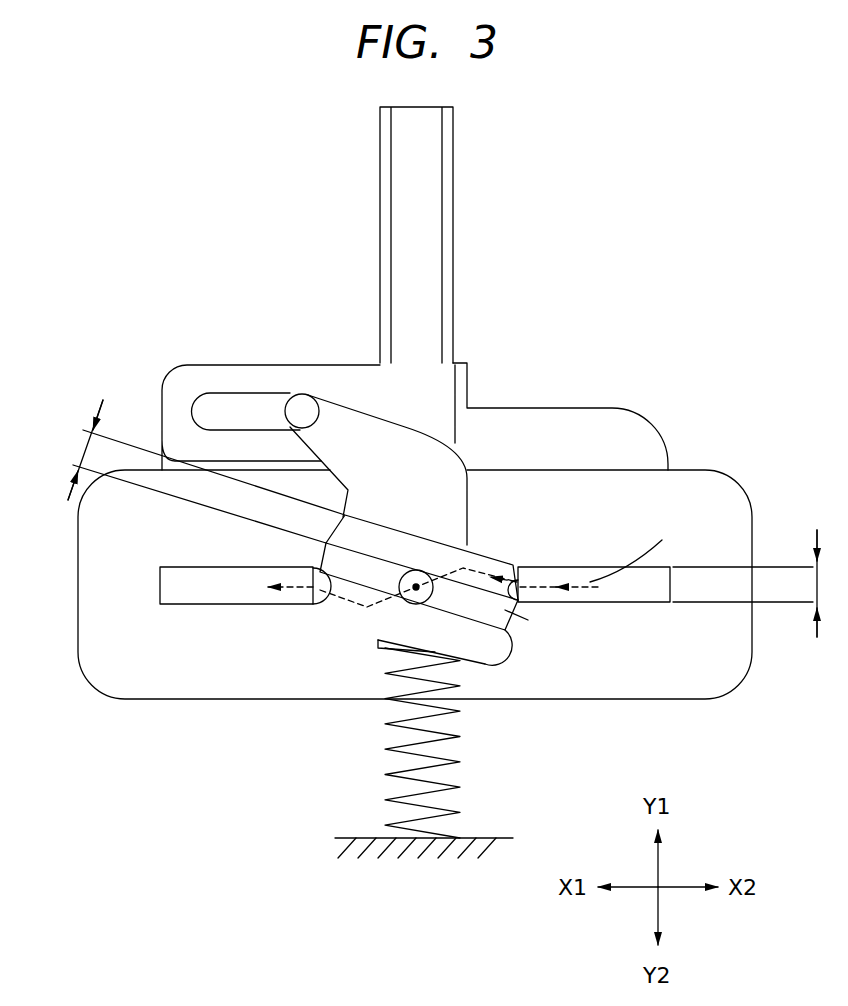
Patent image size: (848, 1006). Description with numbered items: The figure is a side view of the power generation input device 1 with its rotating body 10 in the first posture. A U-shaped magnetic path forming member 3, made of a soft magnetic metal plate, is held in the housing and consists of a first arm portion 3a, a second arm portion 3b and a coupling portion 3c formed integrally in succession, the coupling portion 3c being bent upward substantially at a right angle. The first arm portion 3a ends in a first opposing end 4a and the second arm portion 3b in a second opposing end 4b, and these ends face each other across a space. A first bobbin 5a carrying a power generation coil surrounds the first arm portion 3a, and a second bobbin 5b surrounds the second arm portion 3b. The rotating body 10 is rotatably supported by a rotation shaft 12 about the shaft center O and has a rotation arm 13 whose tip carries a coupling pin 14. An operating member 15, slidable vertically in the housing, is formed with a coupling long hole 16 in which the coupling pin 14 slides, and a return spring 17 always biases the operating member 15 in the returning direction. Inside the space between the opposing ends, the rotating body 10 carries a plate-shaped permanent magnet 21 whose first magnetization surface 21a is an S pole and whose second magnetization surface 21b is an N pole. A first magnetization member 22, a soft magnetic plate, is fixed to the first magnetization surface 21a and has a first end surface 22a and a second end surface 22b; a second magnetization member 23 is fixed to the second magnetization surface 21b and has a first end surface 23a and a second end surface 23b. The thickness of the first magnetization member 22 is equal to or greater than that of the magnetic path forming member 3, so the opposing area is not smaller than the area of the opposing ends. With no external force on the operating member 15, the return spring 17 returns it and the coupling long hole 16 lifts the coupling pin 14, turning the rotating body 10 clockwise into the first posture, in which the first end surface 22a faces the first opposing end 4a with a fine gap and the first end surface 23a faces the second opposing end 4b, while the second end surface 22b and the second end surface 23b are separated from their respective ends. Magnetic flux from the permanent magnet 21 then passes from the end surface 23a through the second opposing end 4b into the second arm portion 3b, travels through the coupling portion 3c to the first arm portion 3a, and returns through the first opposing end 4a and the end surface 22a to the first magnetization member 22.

The lens driving device 1 is at (618, 281).
The magnetic path forming member 3 is at (666, 420).
The first arm portion 3a is at (650, 595).
The second arm portion 3b is at (175, 585).
The coupling portion 3c is at (610, 427).
The first opposing end 4a is at (522, 600).
The second opposing end 4b is at (313, 607).
The first bobbin 5a is at (738, 510).
The second bobbin 5b is at (102, 546).
The rotating body 10 is at (507, 555).
The rotation shaft 12 is at (403, 597).
The rotation arm 13 is at (355, 423).
The coupling pin 14 is at (305, 412).
The operating member 15 is at (443, 183).
The coupling long hole 16 is at (245, 398).
The return spring 17 is at (450, 764).
The permanent magnet 21 is at (333, 560).
The first magnetization surface 21a is at (365, 530).
The second magnetization surface 21b is at (353, 580).
The first magnetization member 22 is at (462, 545).
The first end surface 22a is at (522, 572).
The second end surface 22b is at (330, 528).
The second magnetization member 23 is at (475, 643).
The first end surface 23a is at (267, 603).
The second end surface 23b is at (505, 640).